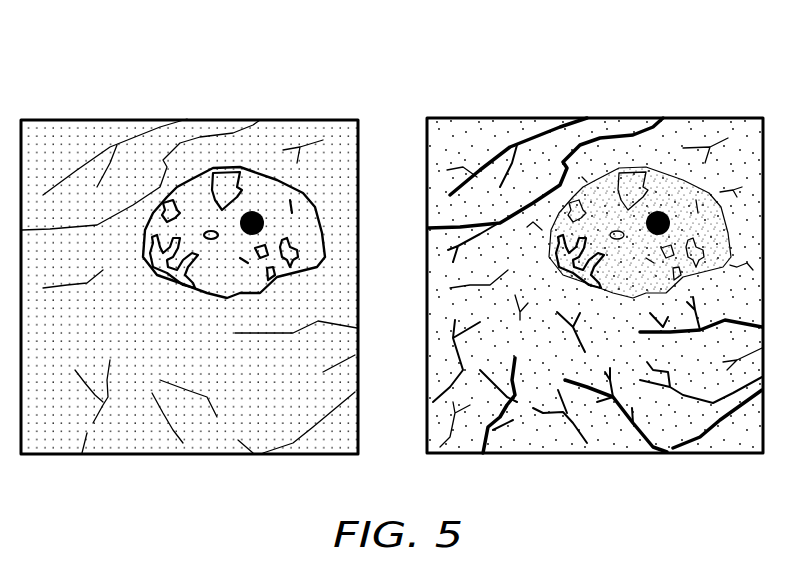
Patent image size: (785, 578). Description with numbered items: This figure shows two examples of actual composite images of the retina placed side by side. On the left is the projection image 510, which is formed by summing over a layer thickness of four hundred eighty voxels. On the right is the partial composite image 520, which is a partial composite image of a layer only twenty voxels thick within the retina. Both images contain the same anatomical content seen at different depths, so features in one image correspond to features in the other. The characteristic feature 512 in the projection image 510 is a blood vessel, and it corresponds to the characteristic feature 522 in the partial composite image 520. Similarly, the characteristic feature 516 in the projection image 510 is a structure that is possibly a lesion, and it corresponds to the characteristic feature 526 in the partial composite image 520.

The projection image 510 is at (191, 462).
The characteristic feature 512 is at (173, 146).
The characteristic feature 516 is at (254, 213).
The partial composite image 520 is at (613, 462).
The characteristic feature 522 is at (566, 147).
The characteristic feature 526 is at (660, 213).